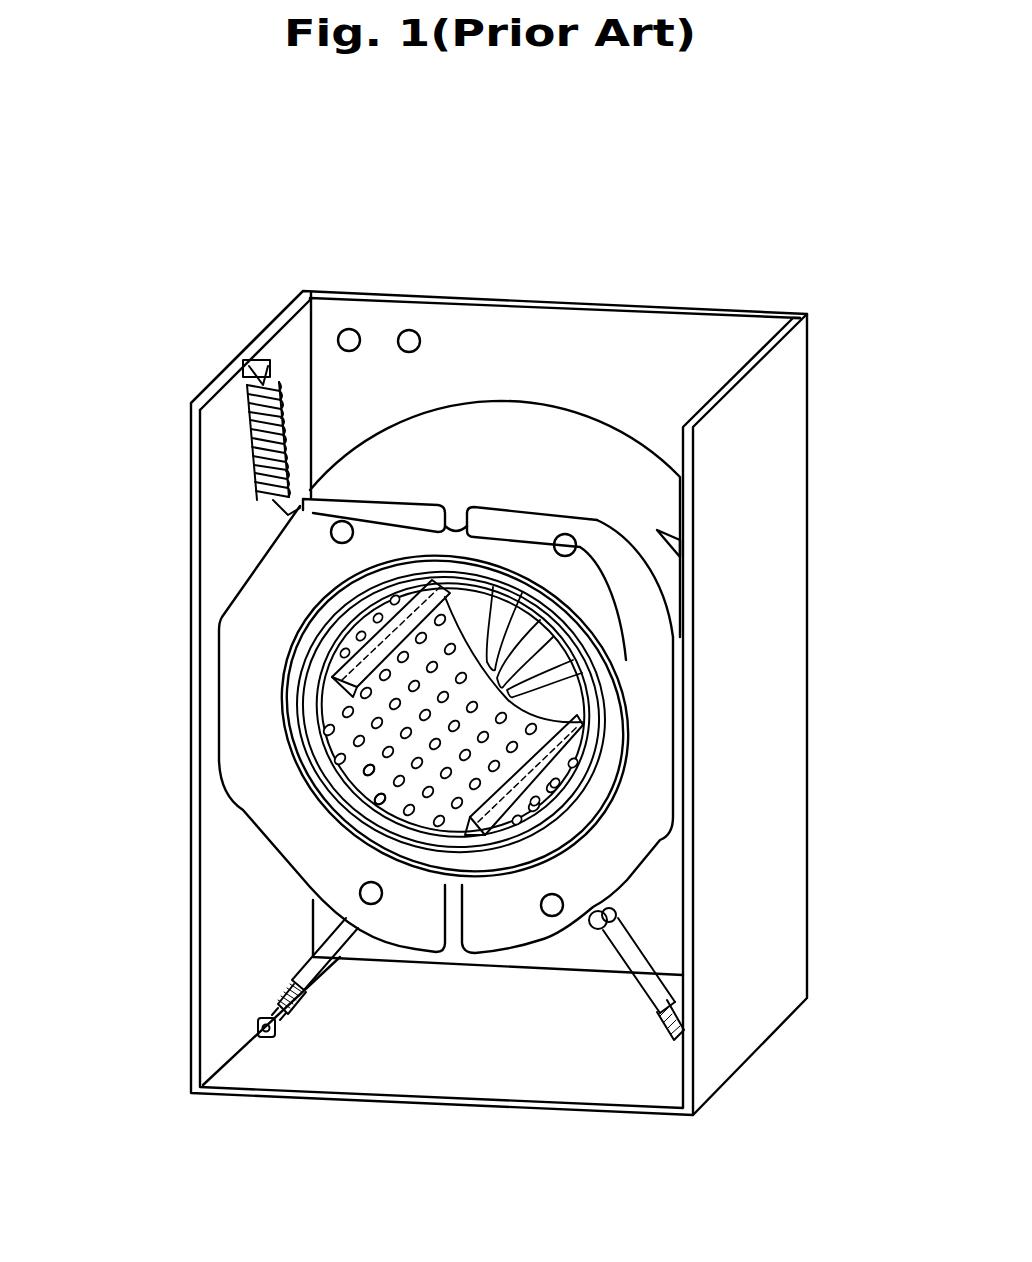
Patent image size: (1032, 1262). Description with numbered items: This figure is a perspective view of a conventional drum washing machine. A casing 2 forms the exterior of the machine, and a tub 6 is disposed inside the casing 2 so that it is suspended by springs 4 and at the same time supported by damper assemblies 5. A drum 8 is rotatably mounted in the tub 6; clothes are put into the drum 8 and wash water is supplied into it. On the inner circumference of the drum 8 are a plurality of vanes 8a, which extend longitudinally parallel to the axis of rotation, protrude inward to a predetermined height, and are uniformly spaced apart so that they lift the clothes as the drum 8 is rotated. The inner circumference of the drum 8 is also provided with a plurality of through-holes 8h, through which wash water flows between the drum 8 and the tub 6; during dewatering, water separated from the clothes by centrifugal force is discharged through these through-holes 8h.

The casing 2 is at (797, 547).
The springs 4 is at (253, 452).
The damper assemblies 5 is at (293, 965).
The tub 6 is at (543, 425).
The drum 8 is at (342, 745).
The vanes 8a is at (346, 686).
The through-holes 8h is at (354, 788).